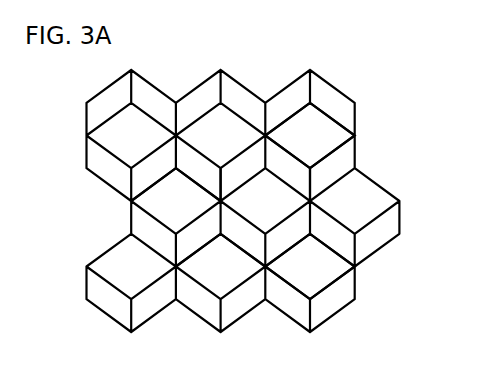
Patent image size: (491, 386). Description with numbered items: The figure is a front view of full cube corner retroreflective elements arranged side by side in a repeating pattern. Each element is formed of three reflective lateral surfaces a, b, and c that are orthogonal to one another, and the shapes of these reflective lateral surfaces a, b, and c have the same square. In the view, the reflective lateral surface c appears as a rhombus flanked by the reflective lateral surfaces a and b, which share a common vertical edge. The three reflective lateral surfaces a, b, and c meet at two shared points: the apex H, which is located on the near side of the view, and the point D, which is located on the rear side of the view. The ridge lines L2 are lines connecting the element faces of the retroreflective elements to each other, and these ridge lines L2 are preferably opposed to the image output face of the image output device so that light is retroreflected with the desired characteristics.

The reflective lateral surface a is at (233, 213).
The reflective lateral surface b is at (228, 213).
The reflective lateral surface c is at (243, 201).
The point D is at (310, 103).
The apex H is at (223, 167).
The ridge line L2 is at (310, 202).